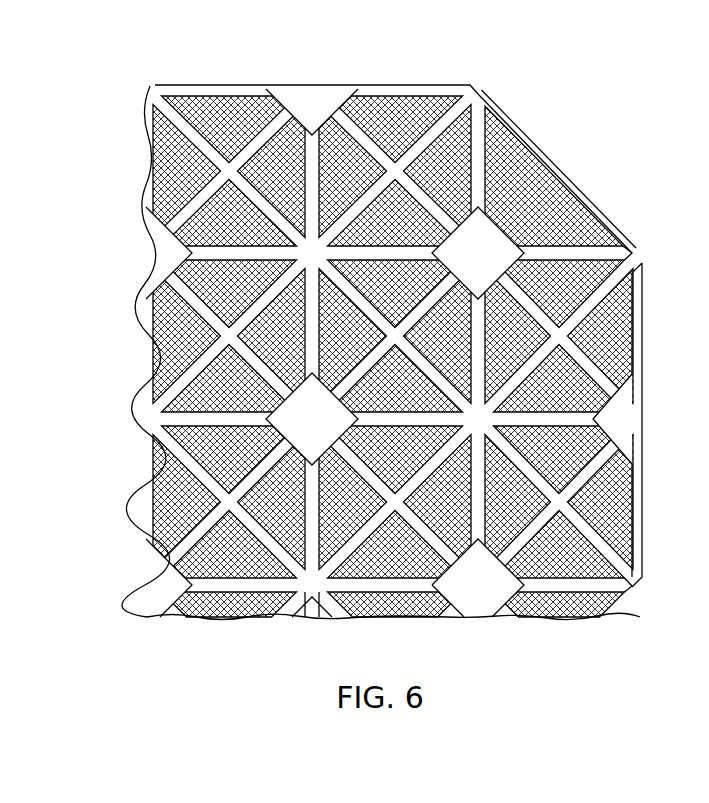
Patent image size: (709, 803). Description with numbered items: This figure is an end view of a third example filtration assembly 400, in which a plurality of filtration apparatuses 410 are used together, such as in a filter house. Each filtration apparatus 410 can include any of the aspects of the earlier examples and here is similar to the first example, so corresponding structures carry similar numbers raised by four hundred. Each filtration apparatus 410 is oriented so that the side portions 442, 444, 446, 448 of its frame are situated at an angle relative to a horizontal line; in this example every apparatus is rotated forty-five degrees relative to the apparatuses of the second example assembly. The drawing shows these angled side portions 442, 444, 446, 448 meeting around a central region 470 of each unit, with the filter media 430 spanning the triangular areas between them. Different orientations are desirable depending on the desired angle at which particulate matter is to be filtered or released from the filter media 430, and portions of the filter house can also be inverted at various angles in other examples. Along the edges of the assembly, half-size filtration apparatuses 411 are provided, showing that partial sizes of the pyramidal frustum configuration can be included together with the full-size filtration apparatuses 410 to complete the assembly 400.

The third example filtration assembly 400 is at (383, 342).
The filtration apparatus 410 is at (565, 175).
The half-size filtration apparatus 411 is at (380, 86).
The filter media 430 is at (453, 152).
The side portion 442 is at (407, 213).
The side portion 444 is at (512, 213).
The side portion 446 is at (512, 314).
The side portion 448 is at (407, 314).
The diamond-shaped hub 470 is at (458, 264).